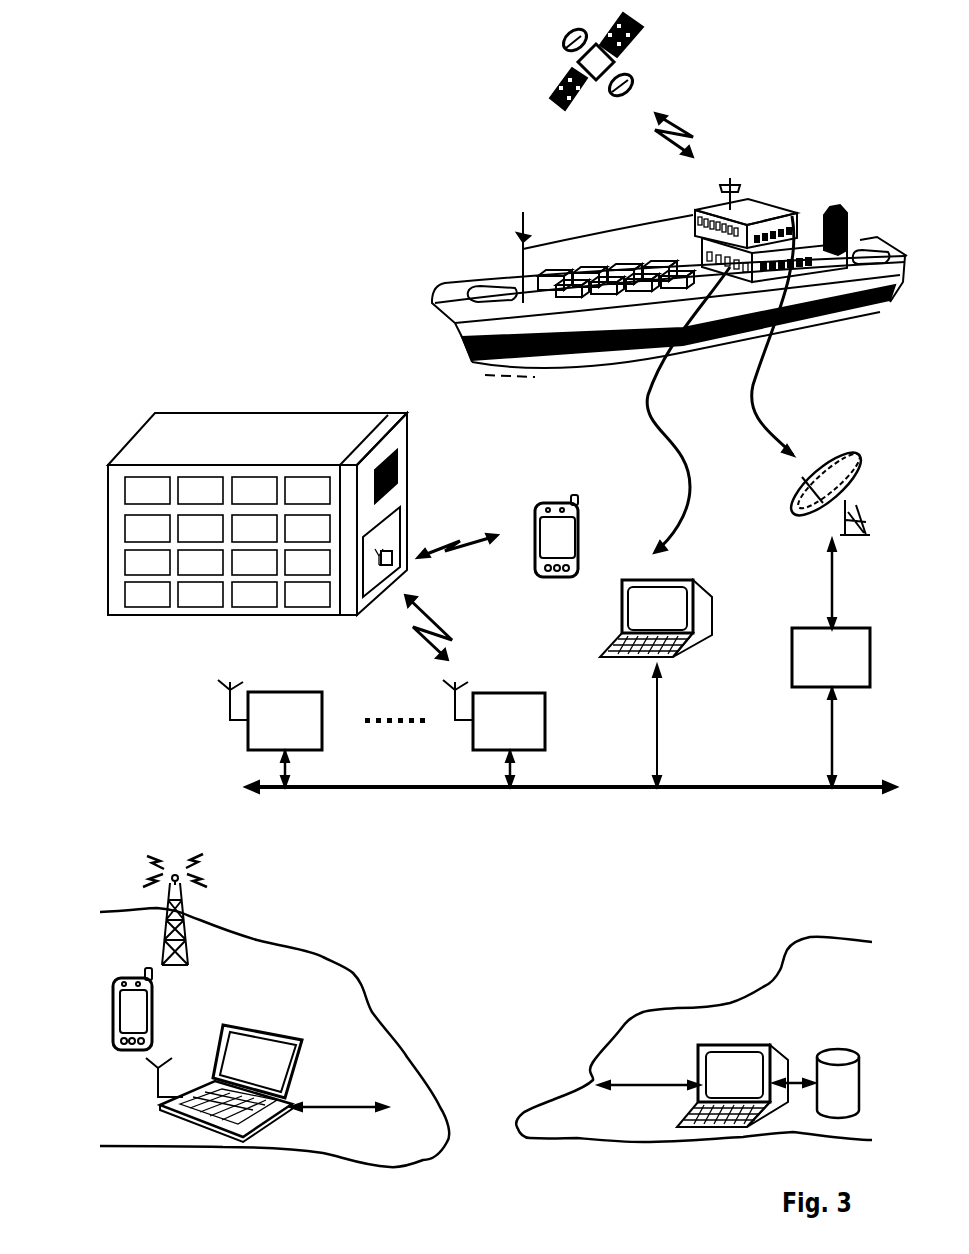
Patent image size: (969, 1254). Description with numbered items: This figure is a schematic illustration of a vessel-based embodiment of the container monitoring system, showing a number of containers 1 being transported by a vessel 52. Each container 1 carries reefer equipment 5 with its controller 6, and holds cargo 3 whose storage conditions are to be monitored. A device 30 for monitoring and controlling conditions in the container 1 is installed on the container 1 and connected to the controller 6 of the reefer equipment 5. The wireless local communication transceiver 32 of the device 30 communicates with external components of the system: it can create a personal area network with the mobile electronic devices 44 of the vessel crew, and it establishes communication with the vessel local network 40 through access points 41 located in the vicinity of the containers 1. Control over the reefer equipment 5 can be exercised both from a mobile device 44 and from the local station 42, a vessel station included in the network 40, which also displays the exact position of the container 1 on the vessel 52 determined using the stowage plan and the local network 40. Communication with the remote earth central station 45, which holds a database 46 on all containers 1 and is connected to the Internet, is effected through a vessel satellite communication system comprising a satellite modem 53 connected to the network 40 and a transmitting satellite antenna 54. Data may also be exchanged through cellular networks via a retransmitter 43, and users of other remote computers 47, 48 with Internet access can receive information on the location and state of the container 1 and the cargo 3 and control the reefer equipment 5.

The container 1 is at (258, 430).
The cargo 3 is at (138, 562).
The reefer equipment 5 is at (397, 440).
The controller 6 is at (393, 468).
The device 30 is at (400, 527).
The wireless local communication transceiver 32 is at (387, 572).
The local network 40 is at (212, 757).
The access points 41 is at (297, 700).
The local station 42 is at (705, 598).
The retransmitter 43 is at (210, 877).
The mobile electronic devices 44 is at (545, 502).
The remote central station 45 is at (713, 1048).
The database 46 is at (822, 1053).
The remote computer 47 is at (272, 1025).
The remote computer 48 is at (155, 1013).
The vessel 52 is at (490, 200).
The satellite modem 53 is at (793, 673).
The transmitting satellite antenna 54 is at (850, 457).